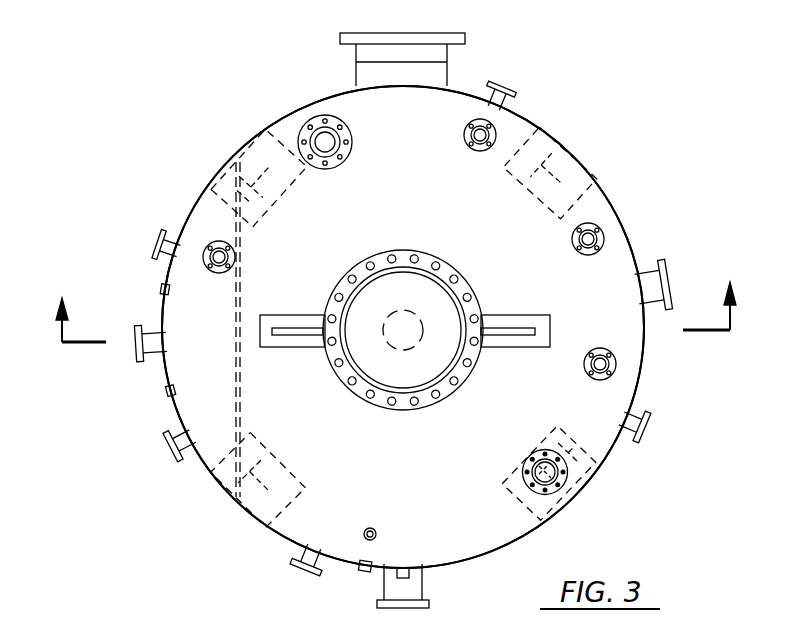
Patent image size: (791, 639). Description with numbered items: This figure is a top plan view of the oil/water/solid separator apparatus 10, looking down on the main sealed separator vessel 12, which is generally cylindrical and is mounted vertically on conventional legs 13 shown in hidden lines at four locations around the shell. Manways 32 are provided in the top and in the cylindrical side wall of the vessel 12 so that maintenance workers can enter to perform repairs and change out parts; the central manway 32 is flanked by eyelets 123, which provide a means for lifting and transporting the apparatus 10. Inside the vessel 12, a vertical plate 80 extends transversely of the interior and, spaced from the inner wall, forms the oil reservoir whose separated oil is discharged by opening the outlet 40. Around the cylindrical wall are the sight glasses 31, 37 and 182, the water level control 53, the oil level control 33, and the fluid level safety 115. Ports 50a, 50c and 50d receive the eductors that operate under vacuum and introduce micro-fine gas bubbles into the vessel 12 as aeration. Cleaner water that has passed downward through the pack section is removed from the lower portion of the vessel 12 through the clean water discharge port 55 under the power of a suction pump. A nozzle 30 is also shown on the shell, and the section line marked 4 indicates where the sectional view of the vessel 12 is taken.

The apparatus 10 is at (631, 168).
The separator vessel 12 is at (628, 236).
The legs 13 is at (247, 168).
The section line 4- 4 is at (393, 296).
The nozzle 30 is at (670, 273).
The sight glass 31 is at (158, 290).
The manway 32 is at (463, 33).
The oil level control 33 is at (160, 448).
The sight glass 37 is at (160, 392).
The outlet 40 is at (138, 343).
The port 50a is at (657, 425).
The port 50c is at (160, 232).
The port 50d is at (518, 72).
The water level control 53 is at (297, 578).
The clean water discharge port 55 is at (420, 622).
The vertical plate 80 is at (239, 405).
The fluid level safety high 115 is at (362, 582).
The eyelets 123 is at (283, 328).
The sight glass 182 is at (410, 578).